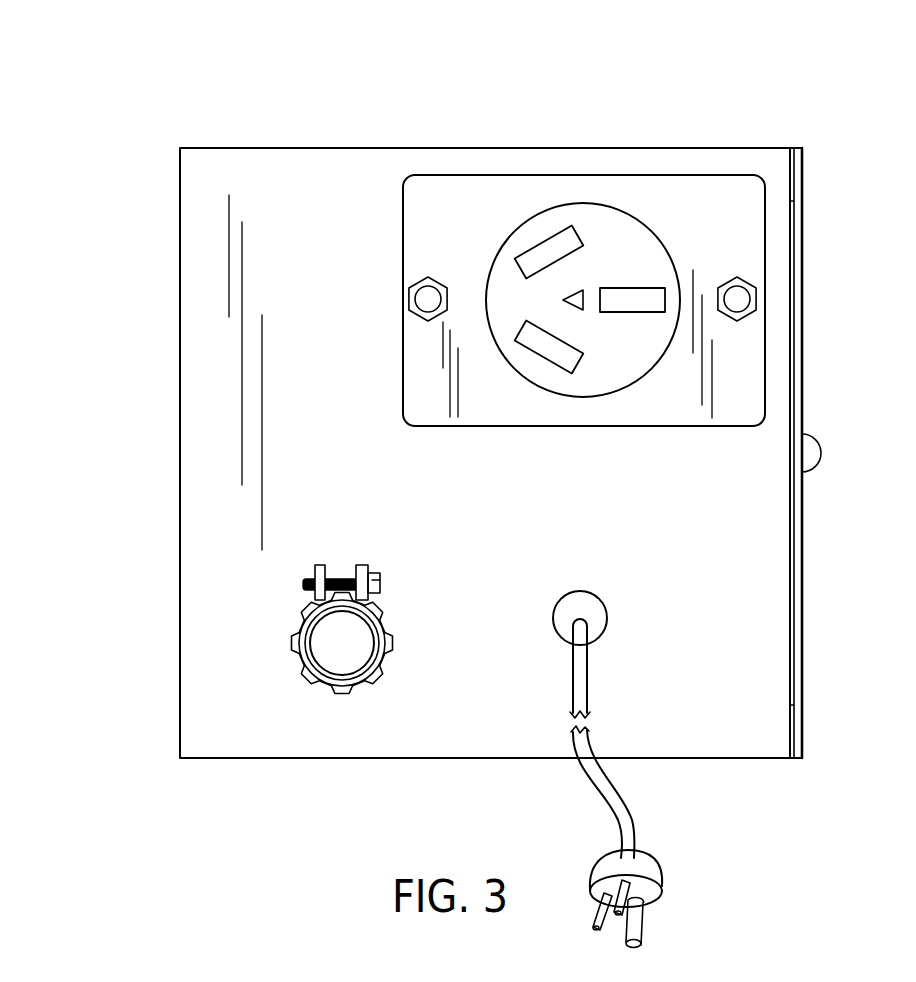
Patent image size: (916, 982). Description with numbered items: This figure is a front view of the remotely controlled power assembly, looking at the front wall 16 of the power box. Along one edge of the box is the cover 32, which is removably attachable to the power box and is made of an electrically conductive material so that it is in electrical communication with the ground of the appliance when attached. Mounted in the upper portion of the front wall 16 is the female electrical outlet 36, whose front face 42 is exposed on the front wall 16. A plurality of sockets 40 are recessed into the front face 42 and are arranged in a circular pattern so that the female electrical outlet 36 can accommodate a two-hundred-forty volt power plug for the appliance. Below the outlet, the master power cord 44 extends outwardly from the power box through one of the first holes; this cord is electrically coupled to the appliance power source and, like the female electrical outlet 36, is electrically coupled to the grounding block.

The front wall 16 is at (208, 281).
The cover 32 is at (803, 230).
The female electrical outlet 36 is at (710, 188).
The sockets 40 is at (537, 343).
The front face 42 is at (632, 338).
The master power cord 44 is at (622, 782).